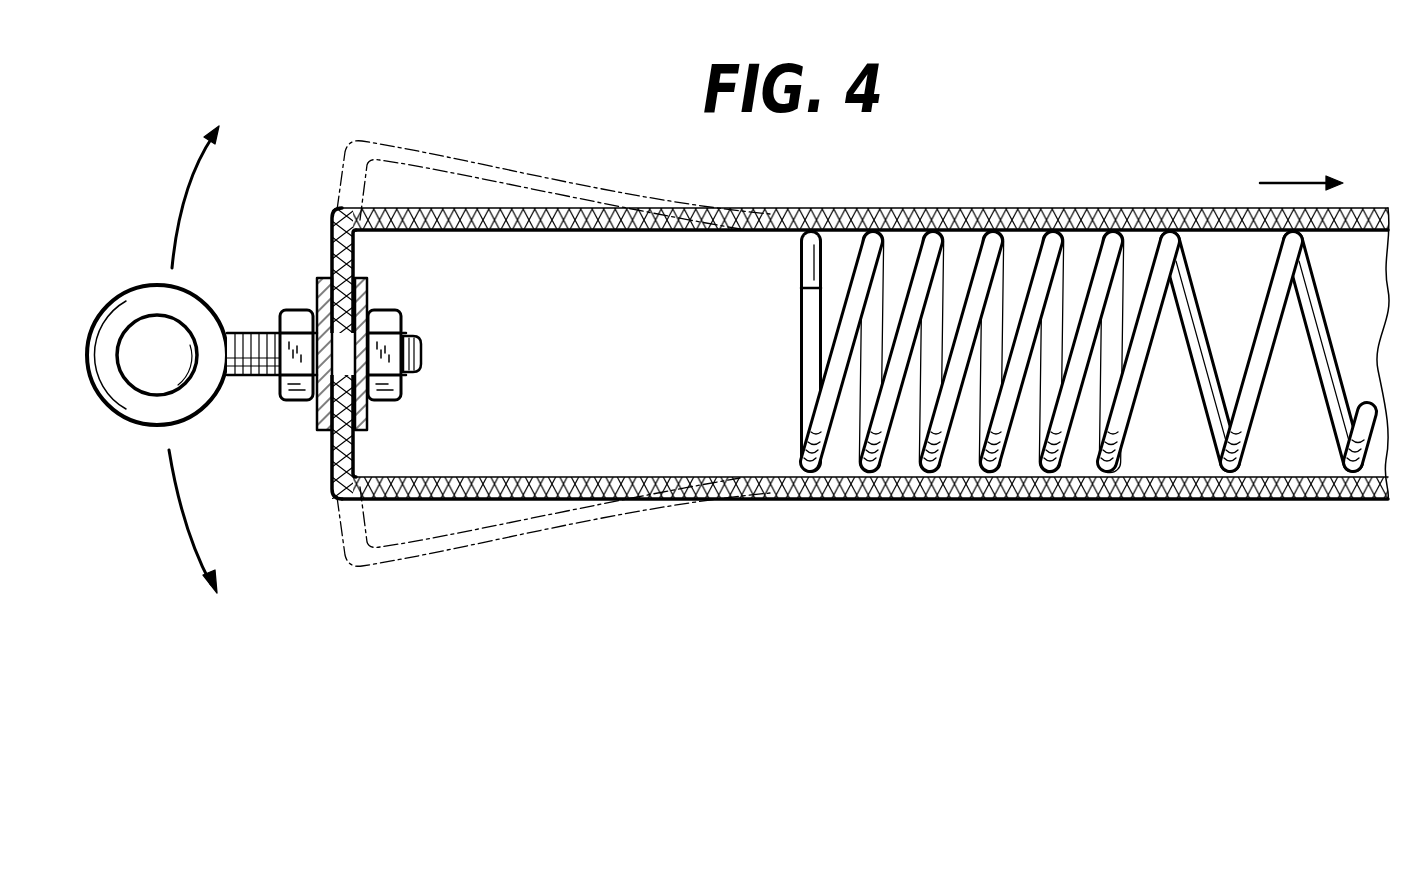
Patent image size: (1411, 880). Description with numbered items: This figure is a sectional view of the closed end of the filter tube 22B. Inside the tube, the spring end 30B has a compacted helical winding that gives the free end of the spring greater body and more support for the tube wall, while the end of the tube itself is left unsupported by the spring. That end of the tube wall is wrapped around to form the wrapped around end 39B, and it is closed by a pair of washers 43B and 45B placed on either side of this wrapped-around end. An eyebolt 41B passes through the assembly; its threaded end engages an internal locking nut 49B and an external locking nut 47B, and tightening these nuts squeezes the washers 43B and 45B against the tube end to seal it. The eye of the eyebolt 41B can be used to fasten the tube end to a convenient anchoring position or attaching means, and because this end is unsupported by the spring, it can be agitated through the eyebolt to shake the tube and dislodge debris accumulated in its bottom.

The tube 22B is at (821, 421).
The spring end 30B is at (1047, 464).
The wrapped around end of the tube wall 39B is at (330, 457).
The eyebolt 41B is at (422, 355).
The washer 43B is at (368, 417).
The washer 45B is at (318, 414).
The external locking nut 47B is at (297, 313).
The internal locking nut 49B is at (384, 312).